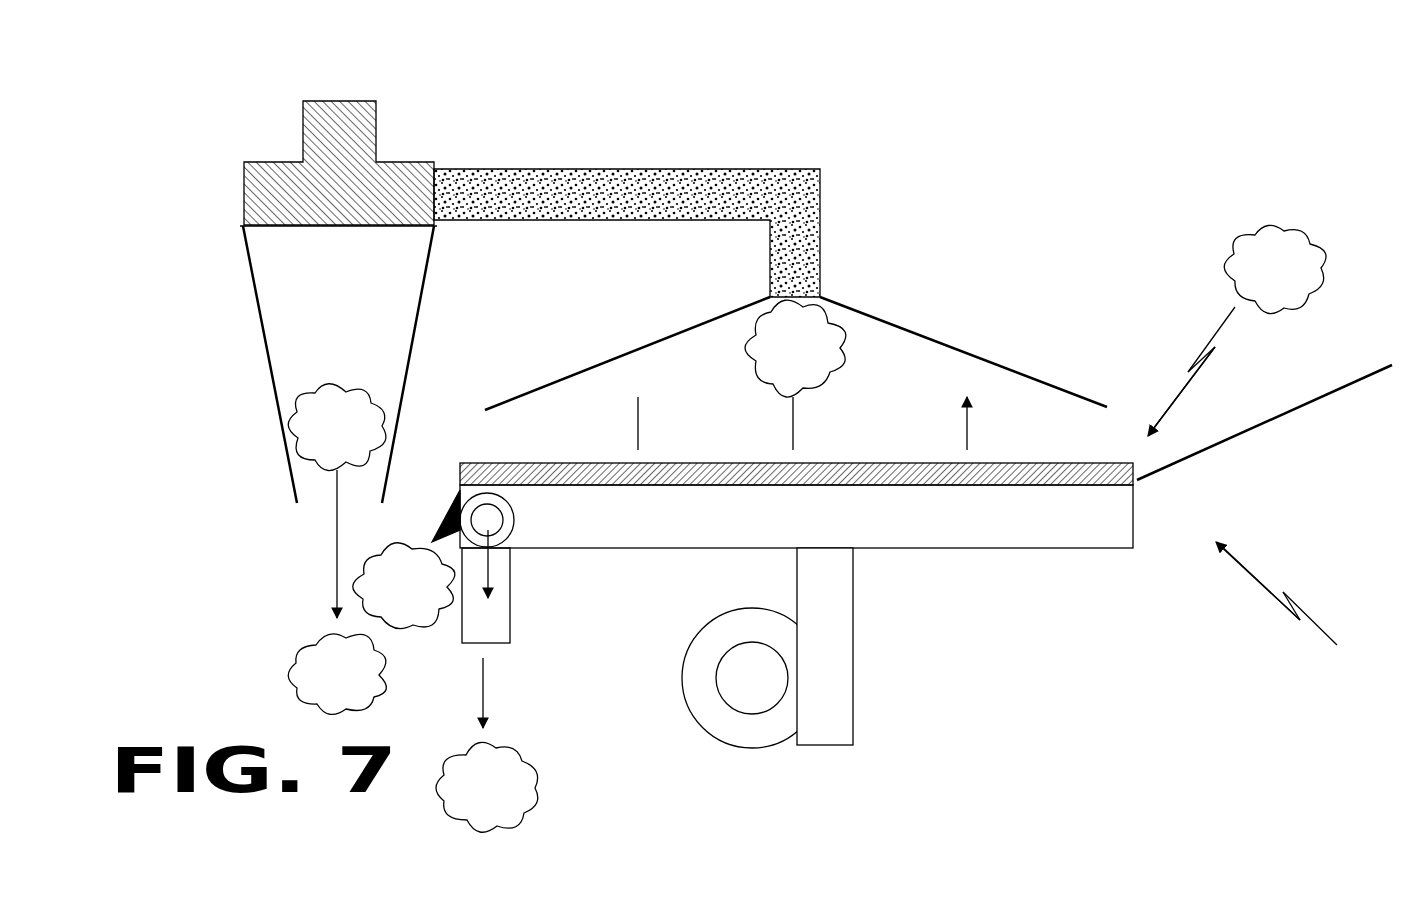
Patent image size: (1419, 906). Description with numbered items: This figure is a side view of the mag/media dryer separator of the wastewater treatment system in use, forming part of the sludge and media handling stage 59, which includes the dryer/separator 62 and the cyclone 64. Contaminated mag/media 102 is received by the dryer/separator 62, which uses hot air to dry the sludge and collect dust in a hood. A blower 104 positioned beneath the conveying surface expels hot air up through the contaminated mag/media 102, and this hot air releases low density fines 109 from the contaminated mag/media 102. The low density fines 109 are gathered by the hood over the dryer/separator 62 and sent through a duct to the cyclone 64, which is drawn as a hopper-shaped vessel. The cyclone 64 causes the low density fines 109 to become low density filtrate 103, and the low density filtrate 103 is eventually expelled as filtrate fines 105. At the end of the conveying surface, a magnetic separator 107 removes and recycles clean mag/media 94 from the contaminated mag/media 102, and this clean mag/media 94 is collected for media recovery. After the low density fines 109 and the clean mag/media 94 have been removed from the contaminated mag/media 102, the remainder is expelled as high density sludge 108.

The sludge and media handling stage 59 is at (958, 240).
The dryer/separator 62 is at (926, 522).
The cyclone 64 is at (369, 122).
The clean mag/media 94 is at (465, 804).
The contaminated mag/media 102 is at (1237, 330).
The low density filtrate 103 is at (312, 442).
The blower 104 is at (828, 718).
The filtrate fines 105 is at (312, 691).
The magnetic separator 107 is at (500, 527).
The high density sludge 108 is at (406, 559).
The low density fines 109 is at (802, 375).